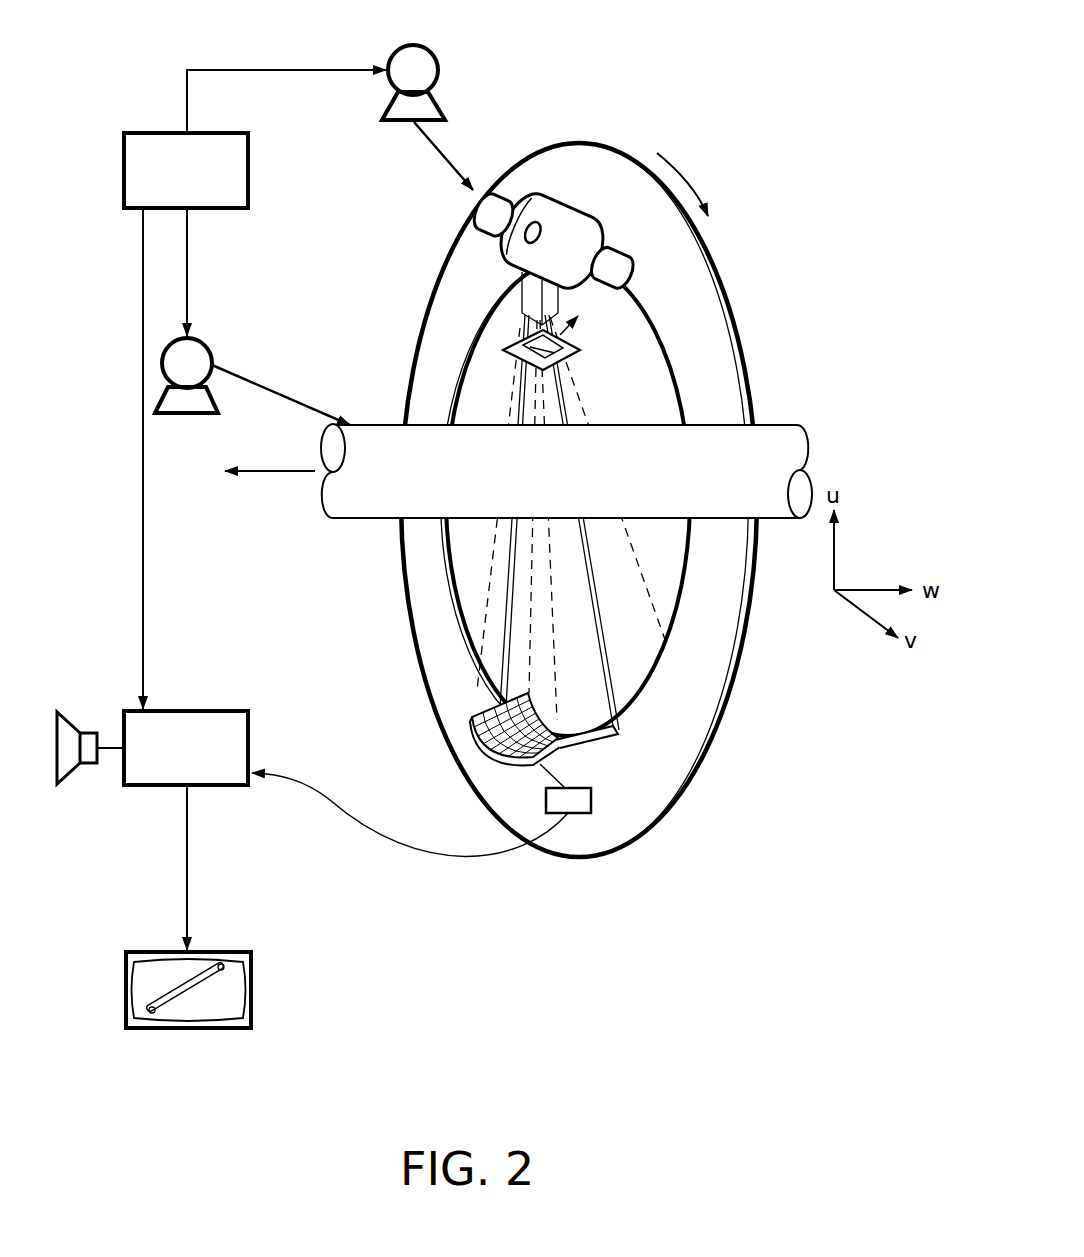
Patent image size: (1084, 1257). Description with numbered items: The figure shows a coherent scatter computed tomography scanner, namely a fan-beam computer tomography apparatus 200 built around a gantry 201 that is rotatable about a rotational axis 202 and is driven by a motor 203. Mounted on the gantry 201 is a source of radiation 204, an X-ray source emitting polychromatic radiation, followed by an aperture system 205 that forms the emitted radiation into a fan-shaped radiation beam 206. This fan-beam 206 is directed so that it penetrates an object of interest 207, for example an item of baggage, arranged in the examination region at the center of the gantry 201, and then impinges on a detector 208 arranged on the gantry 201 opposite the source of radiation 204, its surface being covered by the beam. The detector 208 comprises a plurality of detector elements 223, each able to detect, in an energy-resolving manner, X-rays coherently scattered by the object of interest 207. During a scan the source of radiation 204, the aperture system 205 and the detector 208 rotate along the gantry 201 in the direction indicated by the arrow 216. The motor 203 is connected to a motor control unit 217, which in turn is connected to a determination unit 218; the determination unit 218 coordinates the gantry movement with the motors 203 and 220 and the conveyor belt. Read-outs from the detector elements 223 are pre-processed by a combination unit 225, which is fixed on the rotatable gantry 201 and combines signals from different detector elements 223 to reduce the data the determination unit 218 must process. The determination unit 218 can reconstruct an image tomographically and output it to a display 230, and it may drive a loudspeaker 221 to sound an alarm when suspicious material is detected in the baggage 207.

The computer tomography apparatus 200 is at (688, 78).
The gantry 201 is at (710, 652).
The rotational axis 202 is at (275, 466).
The motor 203 is at (440, 67).
The source of radiation 204 is at (557, 209).
The aperture system 205 is at (513, 343).
The fan-shaped radiation beam 206 is at (545, 397).
The object of interest 207 is at (370, 426).
The detector 208 is at (517, 761).
The arrow 216 is at (683, 182).
The motor control unit 217 is at (152, 133).
The determination unit 218 is at (214, 711).
The motor 220 is at (213, 351).
The loudspeaker 221 is at (69, 716).
The detector elements 223 is at (466, 705).
The combination unit 225 is at (580, 814).
The display 230 is at (252, 991).